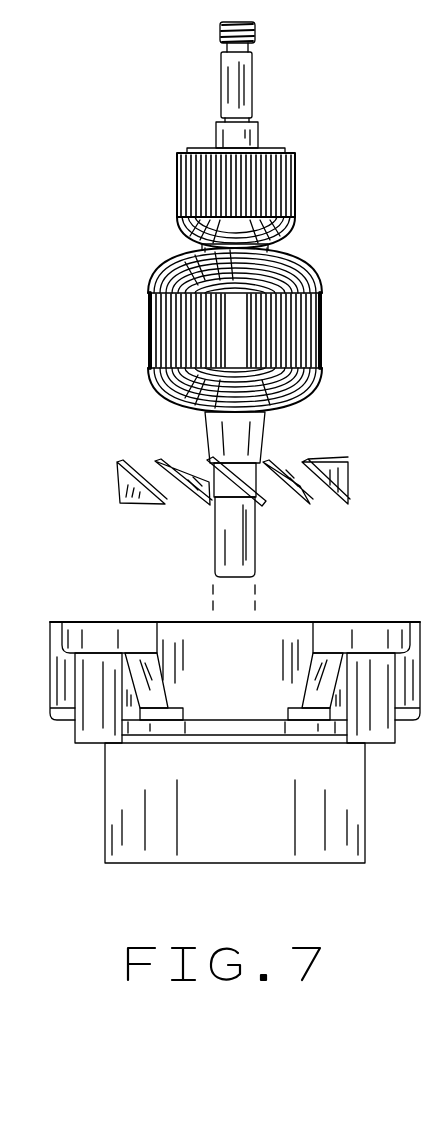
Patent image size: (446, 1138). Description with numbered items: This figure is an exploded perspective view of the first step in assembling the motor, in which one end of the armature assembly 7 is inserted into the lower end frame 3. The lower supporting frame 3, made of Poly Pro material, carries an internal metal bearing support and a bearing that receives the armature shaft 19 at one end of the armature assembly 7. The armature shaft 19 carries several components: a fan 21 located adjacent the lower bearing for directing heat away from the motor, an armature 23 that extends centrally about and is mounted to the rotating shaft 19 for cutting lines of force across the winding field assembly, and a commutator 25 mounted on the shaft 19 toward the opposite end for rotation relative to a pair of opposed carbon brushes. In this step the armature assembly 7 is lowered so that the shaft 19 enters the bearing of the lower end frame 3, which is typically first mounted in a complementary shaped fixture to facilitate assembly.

The lower supporting frame 3 is at (92, 815).
The armature assembly 7 is at (120, 331).
The armature shaft 19 is at (243, 93).
The fan 21 is at (343, 462).
The armature 23 is at (303, 267).
The commutator 25 is at (295, 193).